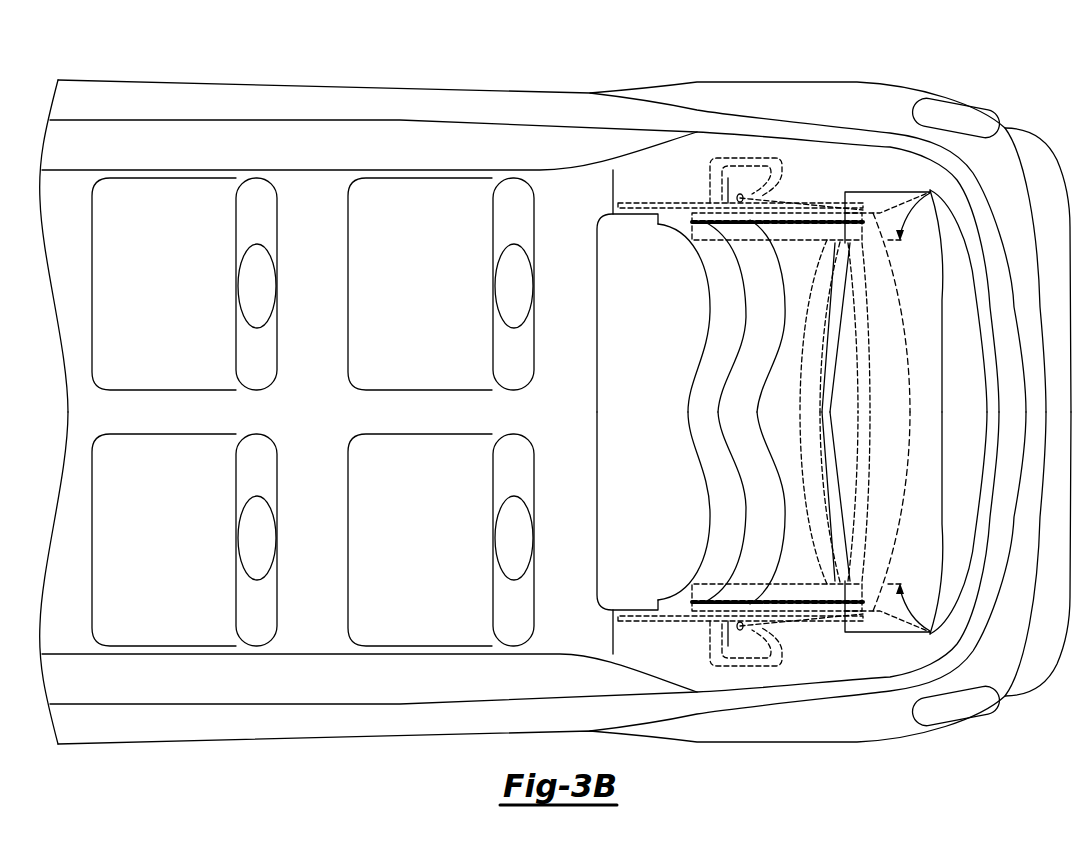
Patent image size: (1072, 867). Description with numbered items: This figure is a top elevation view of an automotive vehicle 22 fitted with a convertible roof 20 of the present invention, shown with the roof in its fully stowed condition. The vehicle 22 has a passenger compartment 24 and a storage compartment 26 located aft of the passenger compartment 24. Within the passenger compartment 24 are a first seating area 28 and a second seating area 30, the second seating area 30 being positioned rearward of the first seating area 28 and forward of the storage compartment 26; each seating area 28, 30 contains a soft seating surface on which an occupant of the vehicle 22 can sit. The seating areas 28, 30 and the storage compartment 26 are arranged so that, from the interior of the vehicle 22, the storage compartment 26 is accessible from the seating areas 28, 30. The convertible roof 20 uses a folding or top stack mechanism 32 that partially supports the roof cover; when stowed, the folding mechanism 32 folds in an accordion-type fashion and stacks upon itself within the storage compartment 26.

The convertible roof 20 is at (862, 73).
The automotive vehicle 22 is at (499, 80).
The passenger compartment 24 is at (307, 220).
The storage compartment 26 is at (660, 175).
The first seating area 28 is at (167, 207).
The second seating area 30 is at (400, 213).
The folding mechanism 32 is at (945, 83).